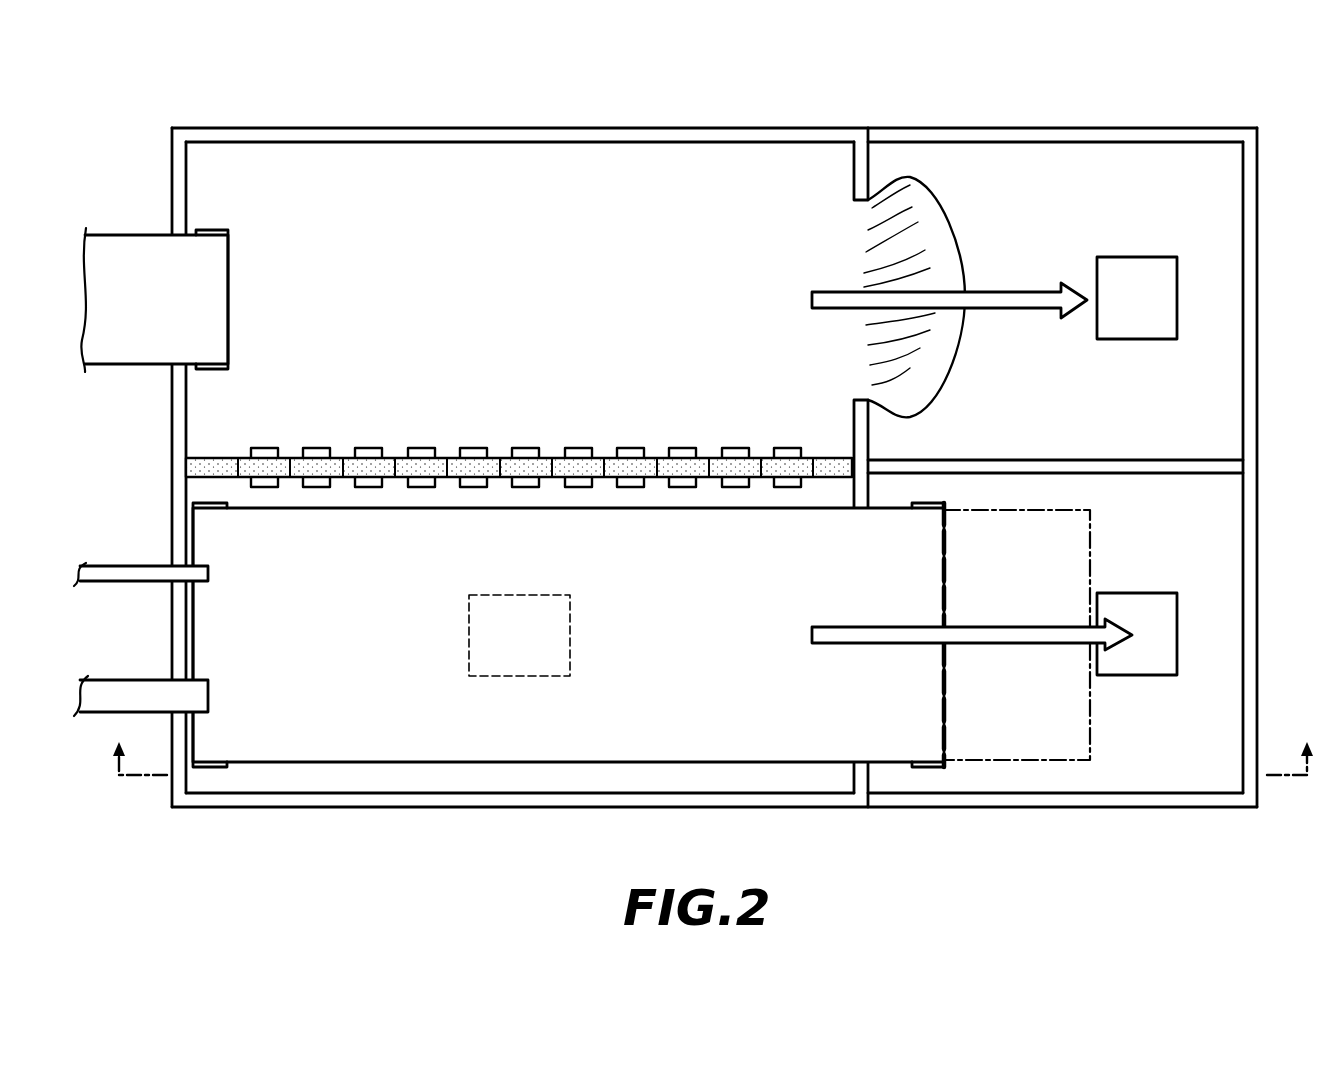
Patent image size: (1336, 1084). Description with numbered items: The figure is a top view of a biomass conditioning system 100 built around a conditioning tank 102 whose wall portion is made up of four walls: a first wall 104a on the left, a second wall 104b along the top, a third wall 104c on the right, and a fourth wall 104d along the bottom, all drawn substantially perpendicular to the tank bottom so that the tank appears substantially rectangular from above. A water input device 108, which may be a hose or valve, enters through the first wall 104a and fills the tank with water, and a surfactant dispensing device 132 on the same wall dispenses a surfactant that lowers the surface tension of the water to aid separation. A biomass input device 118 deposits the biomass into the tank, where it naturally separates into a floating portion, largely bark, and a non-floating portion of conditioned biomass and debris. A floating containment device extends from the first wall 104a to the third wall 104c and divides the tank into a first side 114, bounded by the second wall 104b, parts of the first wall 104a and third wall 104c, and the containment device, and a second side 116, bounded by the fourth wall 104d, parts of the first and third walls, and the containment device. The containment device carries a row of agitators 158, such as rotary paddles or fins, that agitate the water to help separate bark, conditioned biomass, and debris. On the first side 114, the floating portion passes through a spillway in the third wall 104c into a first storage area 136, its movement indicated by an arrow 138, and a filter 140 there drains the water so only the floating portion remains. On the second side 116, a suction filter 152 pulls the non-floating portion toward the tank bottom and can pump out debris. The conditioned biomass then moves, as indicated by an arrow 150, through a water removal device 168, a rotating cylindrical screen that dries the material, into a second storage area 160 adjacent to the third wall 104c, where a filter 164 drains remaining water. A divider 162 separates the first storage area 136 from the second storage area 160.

The biomass conditioning system 100 is at (121, 107).
The conditioning tank 102 is at (704, 483).
The first wall 104a is at (178, 413).
The second wall 104b is at (519, 130).
The third wall 104c is at (871, 184).
The fourth wall 104d is at (519, 808).
The water input device 108 is at (150, 684).
The first side 114 is at (520, 300).
The second side 116 is at (568, 635).
The biomass input device 118 is at (152, 250).
The surfactant dispensing device 132 is at (142, 570).
The first storage area 136 is at (1218, 196).
The arrow 138 is at (832, 292).
The filter 140 is at (1134, 262).
The arrow 150 is at (868, 627).
The suction filter 152 is at (566, 635).
The agitators 158 is at (369, 449).
The second storage area 160 is at (1218, 688).
The divider 162 is at (1135, 462).
The filter 164 is at (1140, 594).
The water removal device 168 is at (1088, 745).